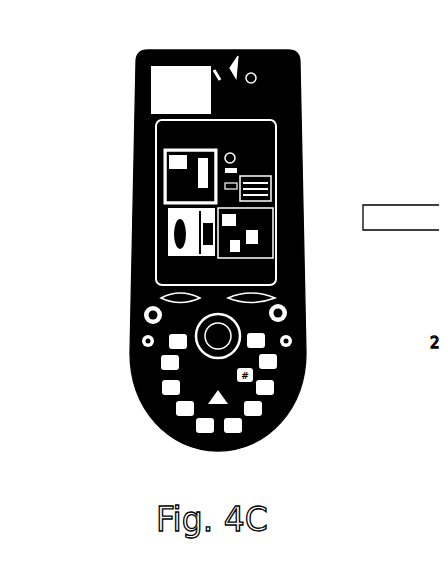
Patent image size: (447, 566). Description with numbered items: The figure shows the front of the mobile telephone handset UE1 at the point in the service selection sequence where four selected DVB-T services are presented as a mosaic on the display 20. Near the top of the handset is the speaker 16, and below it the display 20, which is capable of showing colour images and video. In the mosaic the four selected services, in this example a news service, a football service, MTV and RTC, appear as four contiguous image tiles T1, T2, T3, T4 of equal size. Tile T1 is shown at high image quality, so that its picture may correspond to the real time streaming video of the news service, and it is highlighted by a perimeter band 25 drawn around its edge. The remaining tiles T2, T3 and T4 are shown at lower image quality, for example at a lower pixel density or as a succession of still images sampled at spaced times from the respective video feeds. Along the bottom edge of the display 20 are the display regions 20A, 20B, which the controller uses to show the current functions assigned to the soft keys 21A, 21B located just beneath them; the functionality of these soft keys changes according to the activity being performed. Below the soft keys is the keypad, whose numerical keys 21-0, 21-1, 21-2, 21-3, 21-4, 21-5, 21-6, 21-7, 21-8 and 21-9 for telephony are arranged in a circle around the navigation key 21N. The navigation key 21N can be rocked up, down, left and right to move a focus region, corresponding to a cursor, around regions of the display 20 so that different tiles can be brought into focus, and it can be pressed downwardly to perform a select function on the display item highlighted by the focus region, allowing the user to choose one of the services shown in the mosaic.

The speaker 16 is at (226, 50).
The mobile telephone handset UE1 is at (293, 90).
The display 20 is at (150, 142).
The image tile T1 is at (160, 165).
The image tile T2 is at (273, 162).
The image tile T3 is at (272, 212).
The image tile T4 is at (162, 218).
The perimeter band 25 is at (160, 183).
The display region 20A is at (263, 263).
The display region 20B is at (165, 265).
The soft key 21A is at (276, 301).
The soft key 21B is at (140, 304).
The navigation key 21N is at (203, 330).
The numerical key 21-0 is at (285, 328).
The numerical key 21-1 is at (172, 323).
The numerical key 21-2 is at (160, 357).
The numerical key 21-3 is at (165, 380).
The numerical key 21-4 is at (175, 402).
The numerical key 21-5 is at (180, 434).
The numerical key 21-6 is at (228, 436).
The numerical key 21-7 is at (255, 420).
The numerical key 21-8 is at (277, 393).
The numerical key 21-9 is at (265, 368).